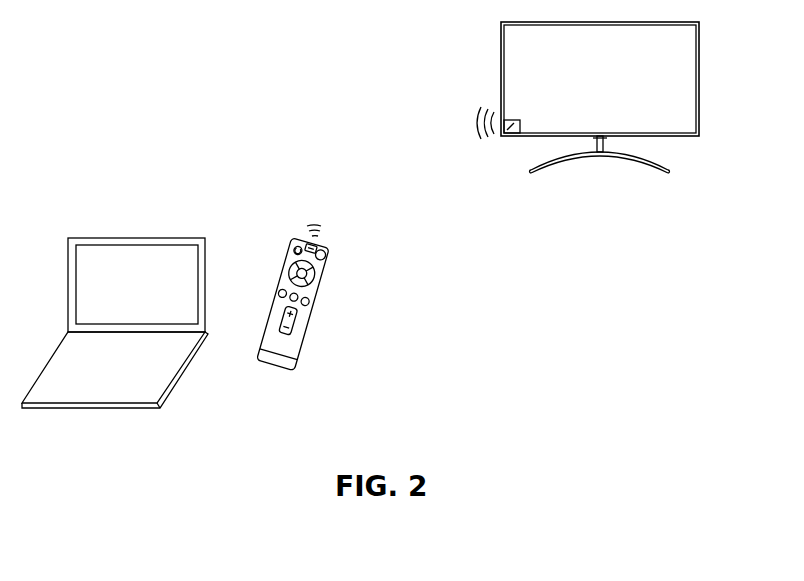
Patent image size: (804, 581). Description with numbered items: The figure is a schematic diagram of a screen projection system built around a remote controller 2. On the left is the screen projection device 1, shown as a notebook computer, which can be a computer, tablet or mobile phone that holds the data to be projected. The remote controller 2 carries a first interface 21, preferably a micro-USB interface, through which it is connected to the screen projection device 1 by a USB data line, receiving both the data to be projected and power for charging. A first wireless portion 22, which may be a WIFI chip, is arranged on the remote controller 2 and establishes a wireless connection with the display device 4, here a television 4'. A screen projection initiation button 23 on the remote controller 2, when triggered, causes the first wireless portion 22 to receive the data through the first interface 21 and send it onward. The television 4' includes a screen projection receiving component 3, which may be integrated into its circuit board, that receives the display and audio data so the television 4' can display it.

The screen projection device 1 is at (108, 260).
The remote controller 2 is at (288, 342).
The first interface 21 is at (270, 365).
The first wireless portion 22 is at (318, 244).
The screen projection initiation button 23 is at (327, 254).
The screen projection receiving component 3 is at (510, 135).
The display device 4 is at (543, 110).
The television 4' is at (600, 79).